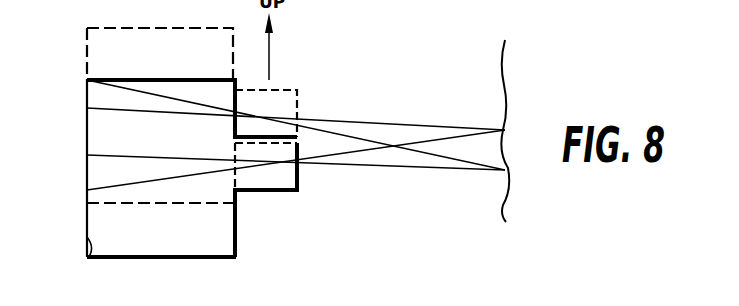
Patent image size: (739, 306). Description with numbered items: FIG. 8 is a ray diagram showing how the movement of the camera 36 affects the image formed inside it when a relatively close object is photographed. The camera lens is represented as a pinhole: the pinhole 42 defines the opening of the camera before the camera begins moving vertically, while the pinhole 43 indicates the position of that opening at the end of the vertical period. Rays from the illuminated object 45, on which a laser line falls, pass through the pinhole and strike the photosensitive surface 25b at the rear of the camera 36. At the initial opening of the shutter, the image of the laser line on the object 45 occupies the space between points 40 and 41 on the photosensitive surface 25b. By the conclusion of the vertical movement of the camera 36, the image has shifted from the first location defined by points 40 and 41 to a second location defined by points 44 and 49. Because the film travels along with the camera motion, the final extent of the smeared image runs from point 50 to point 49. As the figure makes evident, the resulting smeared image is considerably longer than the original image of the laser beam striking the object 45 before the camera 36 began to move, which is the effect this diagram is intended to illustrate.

The point 49 is at (87, 80).
The point 44 is at (87, 108).
The point 41 is at (87, 155).
The point 40 is at (87, 190).
The point 50 is at (88, 136).
The camera lens 43 is at (272, 117).
The camera lens 42 is at (274, 165).
The object 45 is at (534, 97).
The camera 36 is at (206, 258).
The photosensitive surface 25b is at (88, 258).